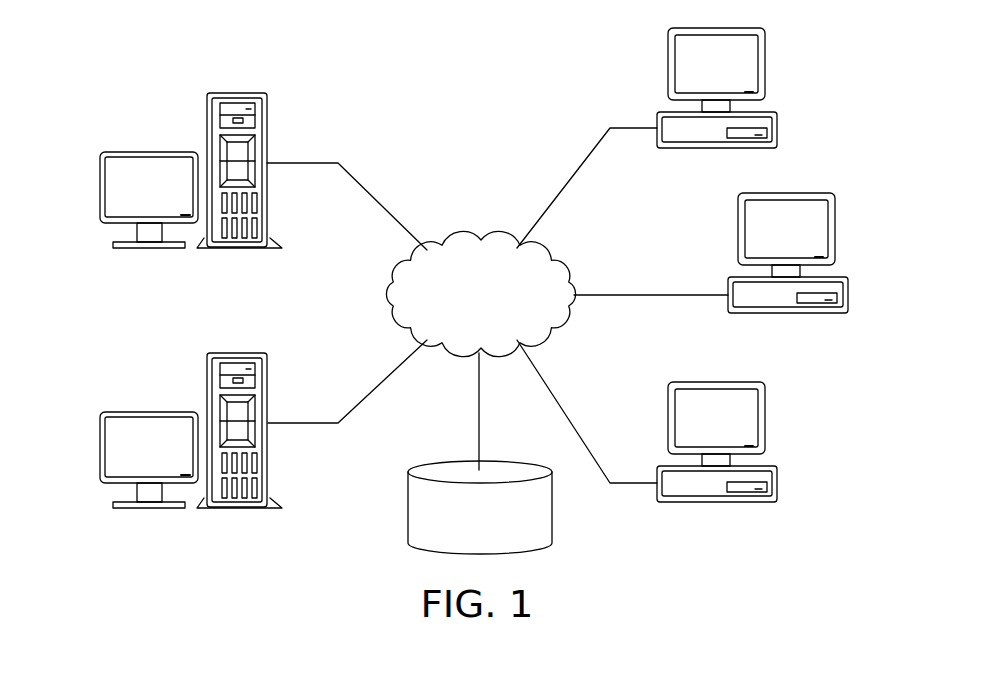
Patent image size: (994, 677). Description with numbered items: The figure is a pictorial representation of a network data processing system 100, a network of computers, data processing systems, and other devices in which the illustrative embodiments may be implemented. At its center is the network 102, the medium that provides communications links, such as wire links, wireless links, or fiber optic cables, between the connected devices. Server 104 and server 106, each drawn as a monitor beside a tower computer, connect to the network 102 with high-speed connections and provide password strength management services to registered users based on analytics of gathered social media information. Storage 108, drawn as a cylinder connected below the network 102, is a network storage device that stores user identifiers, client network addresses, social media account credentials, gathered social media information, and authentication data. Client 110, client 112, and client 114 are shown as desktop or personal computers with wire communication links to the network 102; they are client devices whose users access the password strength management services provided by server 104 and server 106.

The network data processing system 100 is at (340, 70).
The network 102 is at (453, 240).
The server 104 is at (100, 190).
The server 106 is at (100, 448).
The storage 108 is at (408, 507).
The client 110 is at (777, 118).
The client 112 is at (848, 305).
The client 114 is at (777, 492).